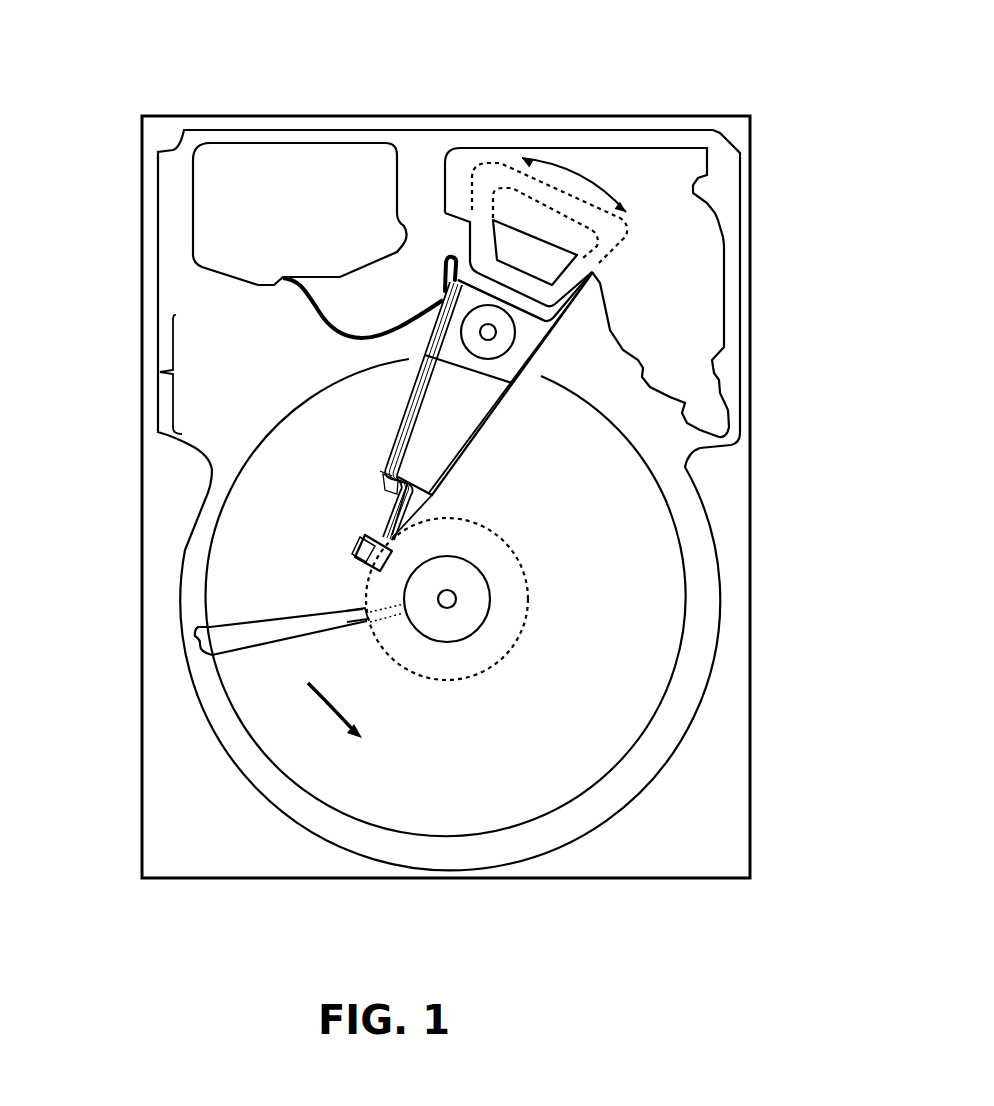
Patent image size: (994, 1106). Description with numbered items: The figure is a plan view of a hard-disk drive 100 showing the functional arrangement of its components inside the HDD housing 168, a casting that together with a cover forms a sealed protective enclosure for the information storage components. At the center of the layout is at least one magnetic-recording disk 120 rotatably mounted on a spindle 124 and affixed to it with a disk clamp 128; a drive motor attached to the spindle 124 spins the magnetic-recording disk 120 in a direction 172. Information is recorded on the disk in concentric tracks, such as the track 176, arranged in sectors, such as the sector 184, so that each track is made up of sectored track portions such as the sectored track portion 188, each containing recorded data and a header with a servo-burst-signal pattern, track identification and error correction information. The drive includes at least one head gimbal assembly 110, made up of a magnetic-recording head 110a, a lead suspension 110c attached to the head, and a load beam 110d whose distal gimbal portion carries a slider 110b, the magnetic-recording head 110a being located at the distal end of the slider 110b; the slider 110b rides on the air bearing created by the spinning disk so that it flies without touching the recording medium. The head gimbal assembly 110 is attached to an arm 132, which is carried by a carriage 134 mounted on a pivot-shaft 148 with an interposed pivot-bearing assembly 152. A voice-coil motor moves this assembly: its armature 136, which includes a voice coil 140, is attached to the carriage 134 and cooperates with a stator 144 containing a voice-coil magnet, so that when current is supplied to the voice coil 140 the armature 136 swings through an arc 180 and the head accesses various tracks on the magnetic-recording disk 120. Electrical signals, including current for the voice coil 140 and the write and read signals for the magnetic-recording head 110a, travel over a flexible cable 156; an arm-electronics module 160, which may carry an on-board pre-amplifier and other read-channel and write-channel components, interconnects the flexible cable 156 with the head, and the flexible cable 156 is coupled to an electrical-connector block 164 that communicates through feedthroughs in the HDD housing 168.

The hard-disk drive 100 is at (135, 80).
The HDD housing 168 is at (738, 130).
The electrical-connector block 164 is at (222, 218).
The flexible cable 156 is at (313, 310).
The stator 144 is at (687, 245).
The arc 180 is at (565, 167).
The armature 136 is at (467, 262).
The voice coil 140 is at (483, 230).
The arm-electronics module 160 is at (445, 300).
The carriage 134 is at (505, 363).
The arm 132 is at (438, 442).
The pivot-bearing assembly 152 is at (498, 340).
The pivot-shaft 148 is at (496, 332).
The magnetic-recording disk 120 is at (619, 551).
The track 176 is at (520, 560).
The disk clamp 128 is at (468, 613).
The spindle 124 is at (456, 600).
The sector 184 is at (193, 643).
The sectored track portion 188 is at (347, 613).
The direction 172 is at (364, 736).
The head gimbal assembly 110 is at (160, 372).
The magnetic-recording head 110a is at (352, 548).
The slider 110b is at (360, 556).
The lead suspension 110c is at (380, 471).
The load beam 110d is at (382, 497).